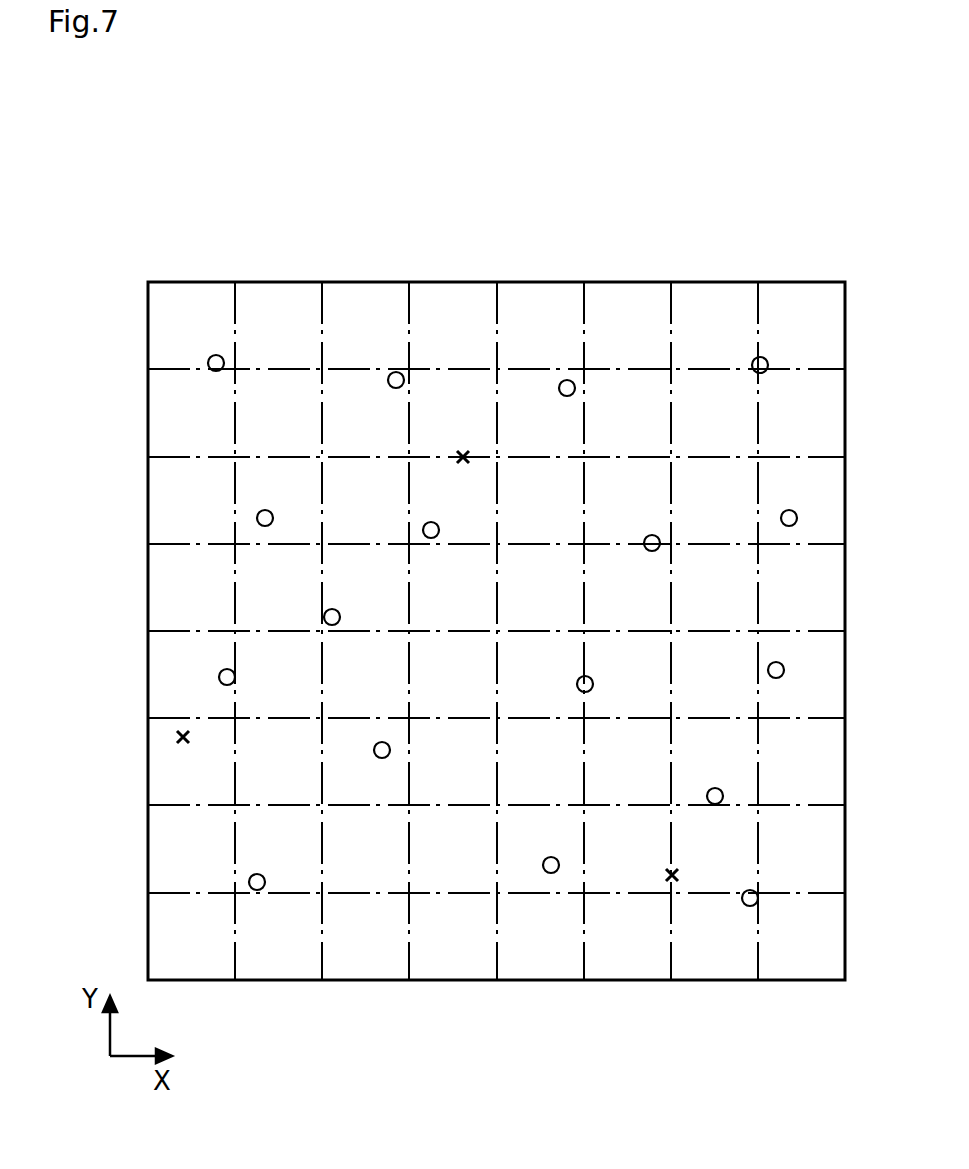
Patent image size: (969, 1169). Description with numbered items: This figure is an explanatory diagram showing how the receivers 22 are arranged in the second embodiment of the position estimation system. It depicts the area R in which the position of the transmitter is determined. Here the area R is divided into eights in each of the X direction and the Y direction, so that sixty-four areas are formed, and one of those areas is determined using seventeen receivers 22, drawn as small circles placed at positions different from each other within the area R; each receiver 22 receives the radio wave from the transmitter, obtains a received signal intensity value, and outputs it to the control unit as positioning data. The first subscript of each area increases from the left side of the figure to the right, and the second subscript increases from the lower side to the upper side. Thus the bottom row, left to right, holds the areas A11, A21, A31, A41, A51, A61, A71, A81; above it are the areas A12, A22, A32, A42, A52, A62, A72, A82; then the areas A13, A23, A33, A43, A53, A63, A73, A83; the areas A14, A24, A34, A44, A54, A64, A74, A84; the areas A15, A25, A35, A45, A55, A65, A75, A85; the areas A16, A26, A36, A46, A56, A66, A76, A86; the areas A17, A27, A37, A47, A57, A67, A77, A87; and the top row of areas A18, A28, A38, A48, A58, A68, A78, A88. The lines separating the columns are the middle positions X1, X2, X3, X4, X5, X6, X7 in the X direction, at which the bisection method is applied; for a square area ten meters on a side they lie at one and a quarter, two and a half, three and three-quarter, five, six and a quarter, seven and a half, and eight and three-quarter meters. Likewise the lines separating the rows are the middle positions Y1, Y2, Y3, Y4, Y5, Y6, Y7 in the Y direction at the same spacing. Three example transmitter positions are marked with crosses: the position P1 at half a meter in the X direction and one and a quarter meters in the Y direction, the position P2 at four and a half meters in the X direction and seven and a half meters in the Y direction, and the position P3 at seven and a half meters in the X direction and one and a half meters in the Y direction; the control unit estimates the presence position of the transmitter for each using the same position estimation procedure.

The receiver 22 is at (208, 360).
The area R is at (822, 282).
The position P1 is at (183, 726).
The position P2 is at (463, 450).
The position P3 is at (682, 875).
The middle position X1 is at (234, 297).
The middle position X2 is at (321, 297).
The middle position X3 is at (408, 297).
The middle position X4 is at (496, 297).
The middle position X5 is at (583, 297).
The middle position X6 is at (670, 297).
The middle position X7 is at (757, 297).
The middle position Y1 is at (163, 893).
The middle position Y2 is at (163, 805).
The middle position Y3 is at (163, 718).
The middle position Y4 is at (163, 631).
The middle position Y5 is at (163, 544).
The middle position Y6 is at (163, 457).
The middle position Y7 is at (163, 369).
The area A11 is at (176, 914).
The area A21 is at (263, 914).
The area A31 is at (350, 914).
The area A41 is at (437, 914).
The area A51 is at (525, 914).
The area A61 is at (612, 914).
The area A71 is at (699, 914).
The area A81 is at (786, 914).
The area A12 is at (176, 826).
The area A22 is at (263, 826).
The area A32 is at (350, 826).
The area A42 is at (437, 826).
The area A52 is at (525, 826).
The area A62 is at (612, 826).
The area A72 is at (699, 826).
The area A82 is at (786, 826).
The area A13 is at (176, 739).
The area A23 is at (263, 739).
The area A33 is at (350, 739).
The area A43 is at (437, 739).
The area A53 is at (525, 739).
The area A63 is at (612, 739).
The area A73 is at (699, 739).
The area A83 is at (786, 739).
The area A14 is at (176, 652).
The area A24 is at (263, 652).
The area A34 is at (350, 652).
The area A44 is at (437, 652).
The area A54 is at (525, 652).
The area A64 is at (612, 652).
The area A74 is at (699, 652).
The area A84 is at (786, 652).
The area A15 is at (176, 565).
The area A25 is at (263, 565).
The area A35 is at (350, 565).
The area A45 is at (437, 565).
The area A55 is at (525, 565).
The area A65 is at (612, 565).
The area A75 is at (699, 565).
The area A85 is at (786, 565).
The area A16 is at (176, 478).
The area A26 is at (263, 478).
The area A36 is at (350, 478).
The area A46 is at (437, 478).
The area A56 is at (525, 478).
The area A66 is at (612, 478).
The area A76 is at (699, 478).
The area A86 is at (786, 478).
The area A17 is at (176, 390).
The area A27 is at (263, 390).
The area A37 is at (350, 390).
The area A47 is at (437, 390).
The area A57 is at (525, 390).
The area A67 is at (612, 390).
The area A77 is at (699, 390).
The area A87 is at (786, 390).
The area A18 is at (176, 303).
The area A28 is at (263, 303).
The area A38 is at (350, 303).
The area A48 is at (437, 303).
The area A58 is at (525, 303).
The area A68 is at (612, 303).
The area A78 is at (699, 303).
The area A88 is at (786, 303).